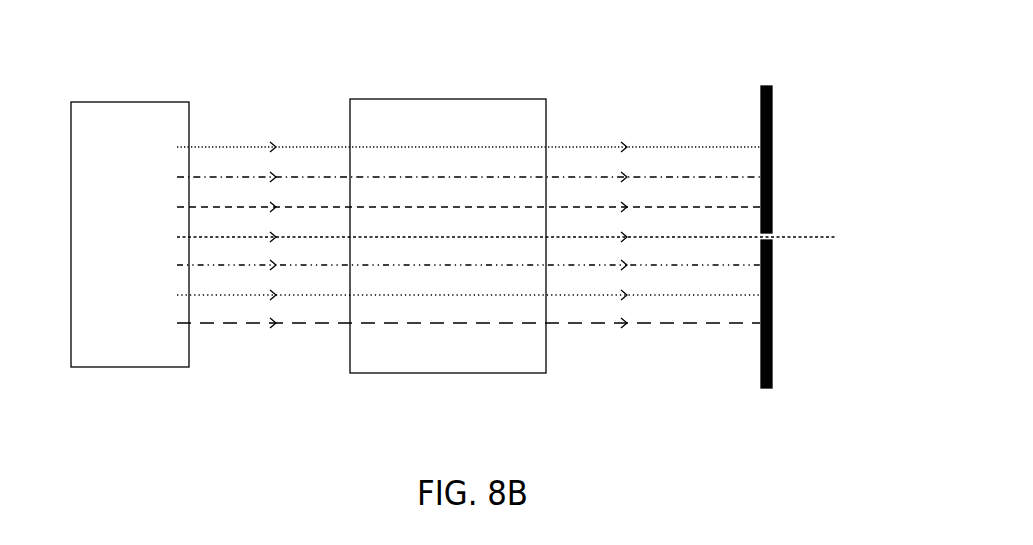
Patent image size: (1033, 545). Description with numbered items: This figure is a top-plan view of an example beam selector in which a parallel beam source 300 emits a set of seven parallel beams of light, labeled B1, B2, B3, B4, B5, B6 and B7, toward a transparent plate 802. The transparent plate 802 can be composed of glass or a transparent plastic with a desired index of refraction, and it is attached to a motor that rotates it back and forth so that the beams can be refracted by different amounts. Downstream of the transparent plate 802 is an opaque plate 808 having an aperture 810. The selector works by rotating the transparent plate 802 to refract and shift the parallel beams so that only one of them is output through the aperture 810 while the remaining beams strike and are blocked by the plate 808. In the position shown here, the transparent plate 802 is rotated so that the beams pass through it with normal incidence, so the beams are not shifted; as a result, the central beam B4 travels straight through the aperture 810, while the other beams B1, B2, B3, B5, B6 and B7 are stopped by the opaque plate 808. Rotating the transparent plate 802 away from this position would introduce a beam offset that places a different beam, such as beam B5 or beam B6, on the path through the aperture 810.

The beam source 300 is at (148, 351).
The transparent plate 802 is at (516, 108).
The opaque plate 808 is at (773, 146).
The aperture 810 is at (772, 234).
The beam B1 is at (454, 146).
The beam B2 is at (454, 176).
The beam B3 is at (454, 206).
The central beam B4 is at (492, 236).
The beam B5 is at (454, 264).
The beam B6 is at (454, 294).
The beam B7 is at (454, 322).